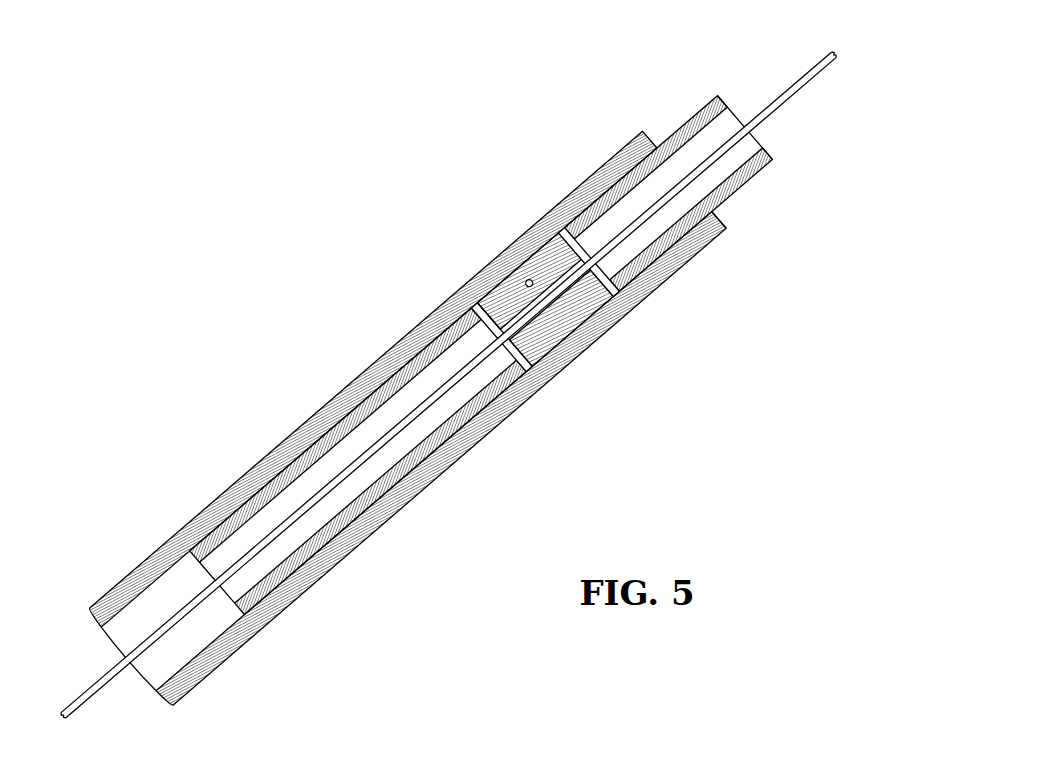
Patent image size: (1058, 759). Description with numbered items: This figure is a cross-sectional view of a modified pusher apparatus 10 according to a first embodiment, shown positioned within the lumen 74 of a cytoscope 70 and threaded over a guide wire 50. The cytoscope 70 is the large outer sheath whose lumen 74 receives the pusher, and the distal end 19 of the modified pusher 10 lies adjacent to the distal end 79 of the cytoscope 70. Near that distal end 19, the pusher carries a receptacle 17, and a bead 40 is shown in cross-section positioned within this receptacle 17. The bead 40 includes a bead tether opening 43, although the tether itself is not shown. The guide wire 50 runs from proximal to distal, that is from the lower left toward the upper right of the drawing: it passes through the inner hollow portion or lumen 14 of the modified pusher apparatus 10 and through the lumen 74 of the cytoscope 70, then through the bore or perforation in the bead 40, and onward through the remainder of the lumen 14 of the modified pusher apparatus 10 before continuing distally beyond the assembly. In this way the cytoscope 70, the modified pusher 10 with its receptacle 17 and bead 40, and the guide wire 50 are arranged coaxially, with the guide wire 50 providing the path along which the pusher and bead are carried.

The modified pusher apparatus 10 is at (682, 122).
The lumen of the modified pusher apparatus 14 is at (743, 115).
The receptacle 17 is at (470, 307).
The distal end of the modified pusher 19 is at (757, 141).
The bead 40 is at (556, 256).
The bead tether opening 43 is at (528, 280).
The guide wire 50 is at (786, 84).
The cytoscope 70 is at (222, 486).
The lumen of the cytoscope 74 is at (122, 636).
The distal end of the cytoscope 79 is at (716, 212).